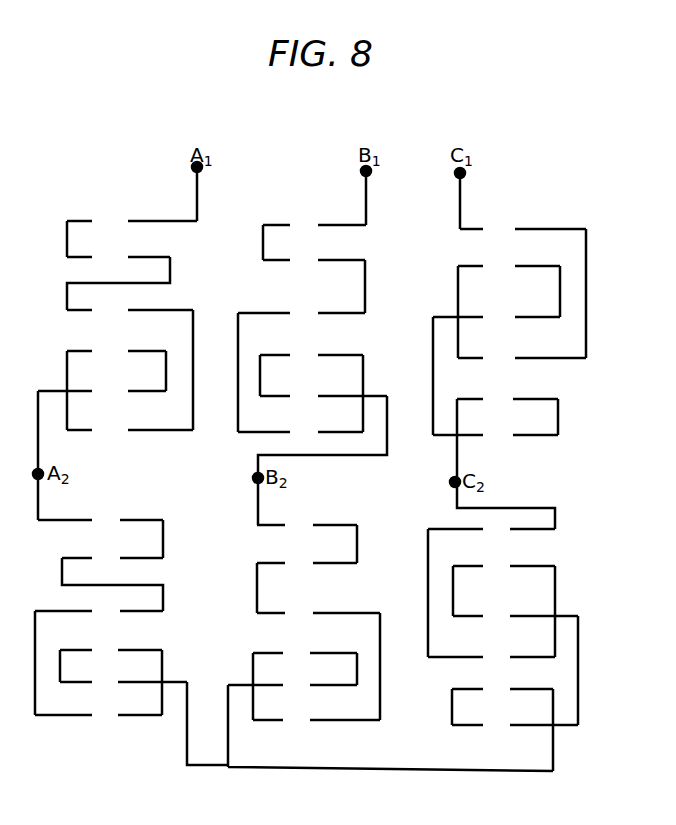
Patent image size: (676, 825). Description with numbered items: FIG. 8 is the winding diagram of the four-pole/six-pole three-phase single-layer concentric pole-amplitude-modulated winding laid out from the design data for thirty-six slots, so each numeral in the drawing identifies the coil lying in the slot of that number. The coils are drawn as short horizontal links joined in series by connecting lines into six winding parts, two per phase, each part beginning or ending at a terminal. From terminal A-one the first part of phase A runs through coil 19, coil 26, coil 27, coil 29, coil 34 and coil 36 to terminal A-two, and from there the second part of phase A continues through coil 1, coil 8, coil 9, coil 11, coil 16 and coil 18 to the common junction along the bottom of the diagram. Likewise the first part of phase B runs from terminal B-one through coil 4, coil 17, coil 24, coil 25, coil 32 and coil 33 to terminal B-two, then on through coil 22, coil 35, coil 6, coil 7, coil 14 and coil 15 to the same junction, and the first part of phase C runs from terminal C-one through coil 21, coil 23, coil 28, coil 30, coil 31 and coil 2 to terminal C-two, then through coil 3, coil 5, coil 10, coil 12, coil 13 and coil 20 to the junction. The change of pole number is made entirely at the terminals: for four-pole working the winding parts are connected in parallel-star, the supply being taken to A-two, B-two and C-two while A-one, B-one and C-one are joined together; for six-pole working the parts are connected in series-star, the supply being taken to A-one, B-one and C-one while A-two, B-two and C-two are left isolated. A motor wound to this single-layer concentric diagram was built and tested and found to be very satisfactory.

The coil 1 is at (100, 521).
The coil 2 is at (495, 436).
The coil 3 is at (491, 530).
The coil 4 is at (314, 226).
The coil 5 is at (504, 567).
The coil 6 is at (318, 614).
The coil 7 is at (305, 654).
The coil 8 is at (112, 559).
The coil 9 is at (99, 612).
The coil 10 is at (515, 617).
The coil 11 is at (111, 651).
The coil 12 is at (491, 658).
The coil 13 is at (502, 690).
The coil 14 is at (292, 686).
The coil 15 is at (316, 721).
The coil 16 is at (123, 683).
The coil 17 is at (314, 261).
The coil 18 is at (98, 716).
The coil 19 is at (132, 222).
The coil 20 is at (515, 726).
The coil 21 is at (523, 230).
The coil 22 is at (307, 526).
The coil 23 is at (509, 267).
The coil 24 is at (301, 314).
The coil 25 is at (311, 356).
The coil 26 is at (118, 258).
The coil 27 is at (130, 311).
The coil 28 is at (496, 318).
The coil 29 is at (116, 352).
The coil 30 is at (522, 359).
The coil 31 is at (507, 400).
The coil 32 is at (323, 397).
The coil 33 is at (300, 433).
The coil 34 is at (102, 392).
The coil 35 is at (307, 564).
The coil 36 is at (130, 431).